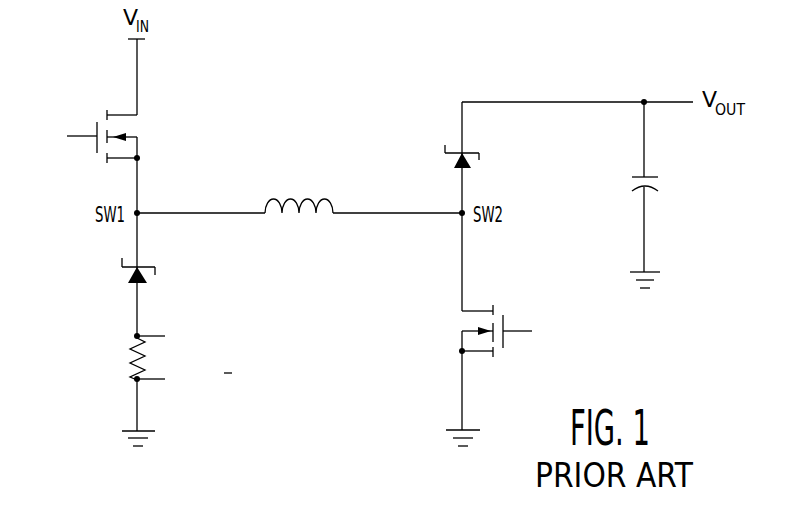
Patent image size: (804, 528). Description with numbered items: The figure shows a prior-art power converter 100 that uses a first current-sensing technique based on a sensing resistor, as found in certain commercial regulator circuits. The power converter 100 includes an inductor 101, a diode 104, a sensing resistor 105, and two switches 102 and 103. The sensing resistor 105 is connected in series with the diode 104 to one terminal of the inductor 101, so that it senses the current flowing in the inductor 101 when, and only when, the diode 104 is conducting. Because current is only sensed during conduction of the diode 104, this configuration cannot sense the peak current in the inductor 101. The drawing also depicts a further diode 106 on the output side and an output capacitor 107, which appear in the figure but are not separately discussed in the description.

The prior art switching regulator circuit 100 is at (327, 67).
The inductor L 101 is at (300, 220).
The high-side switch transistor A 102 is at (100, 105).
The low-side switch transistor C 103 is at (508, 307).
The zener diode B 104 is at (163, 277).
The sense resistor Rsense 105 is at (130, 373).
The zener diode 106 is at (432, 159).
The output capacitor D 107 is at (665, 186).